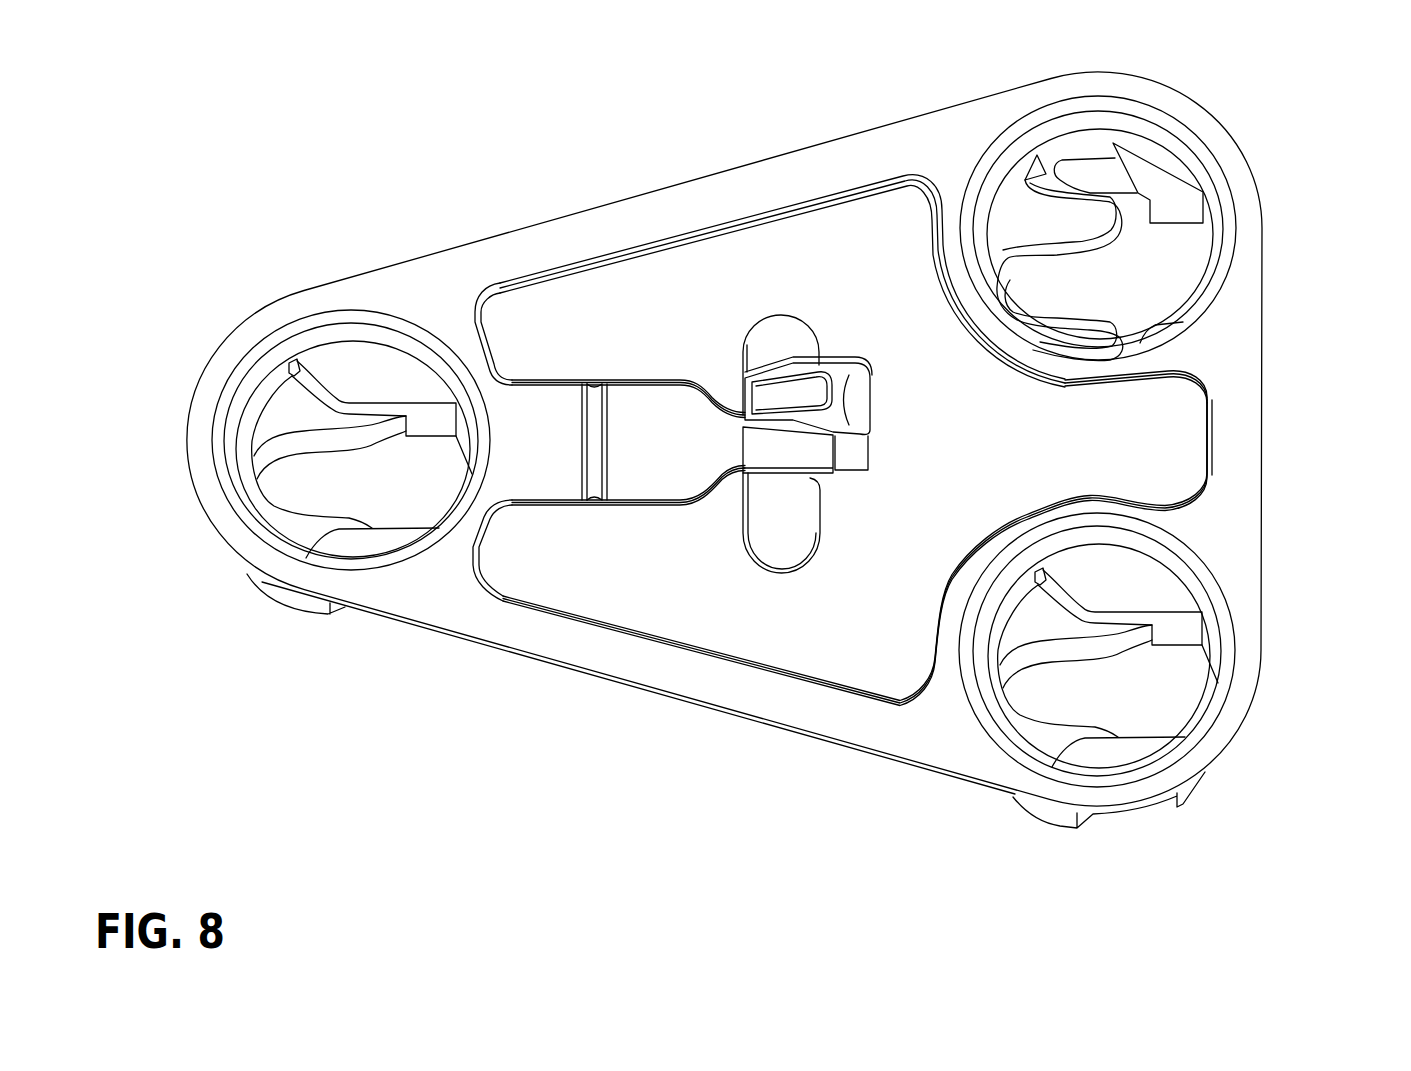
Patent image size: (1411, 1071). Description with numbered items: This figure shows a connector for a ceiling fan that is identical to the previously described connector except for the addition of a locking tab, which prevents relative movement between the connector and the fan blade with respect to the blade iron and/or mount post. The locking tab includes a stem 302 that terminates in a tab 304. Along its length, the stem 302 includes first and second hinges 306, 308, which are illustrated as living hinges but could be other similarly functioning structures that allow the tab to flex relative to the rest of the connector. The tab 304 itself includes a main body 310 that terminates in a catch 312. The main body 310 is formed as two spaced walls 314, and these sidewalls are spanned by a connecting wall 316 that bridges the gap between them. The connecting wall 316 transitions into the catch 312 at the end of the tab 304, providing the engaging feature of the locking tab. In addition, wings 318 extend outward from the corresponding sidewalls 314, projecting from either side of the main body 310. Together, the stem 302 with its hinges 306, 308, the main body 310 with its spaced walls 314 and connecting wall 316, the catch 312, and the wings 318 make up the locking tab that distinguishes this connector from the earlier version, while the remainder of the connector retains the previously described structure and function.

The stem 302 is at (548, 524).
The tab 304 is at (858, 351).
The first hinge 306 is at (583, 430).
The second hinge 308 is at (593, 412).
The main body 310 is at (836, 473).
The catch 312 is at (867, 405).
The spaced walls 314 is at (783, 365).
The connecting wall 316 is at (836, 453).
The wings 318 is at (790, 316).